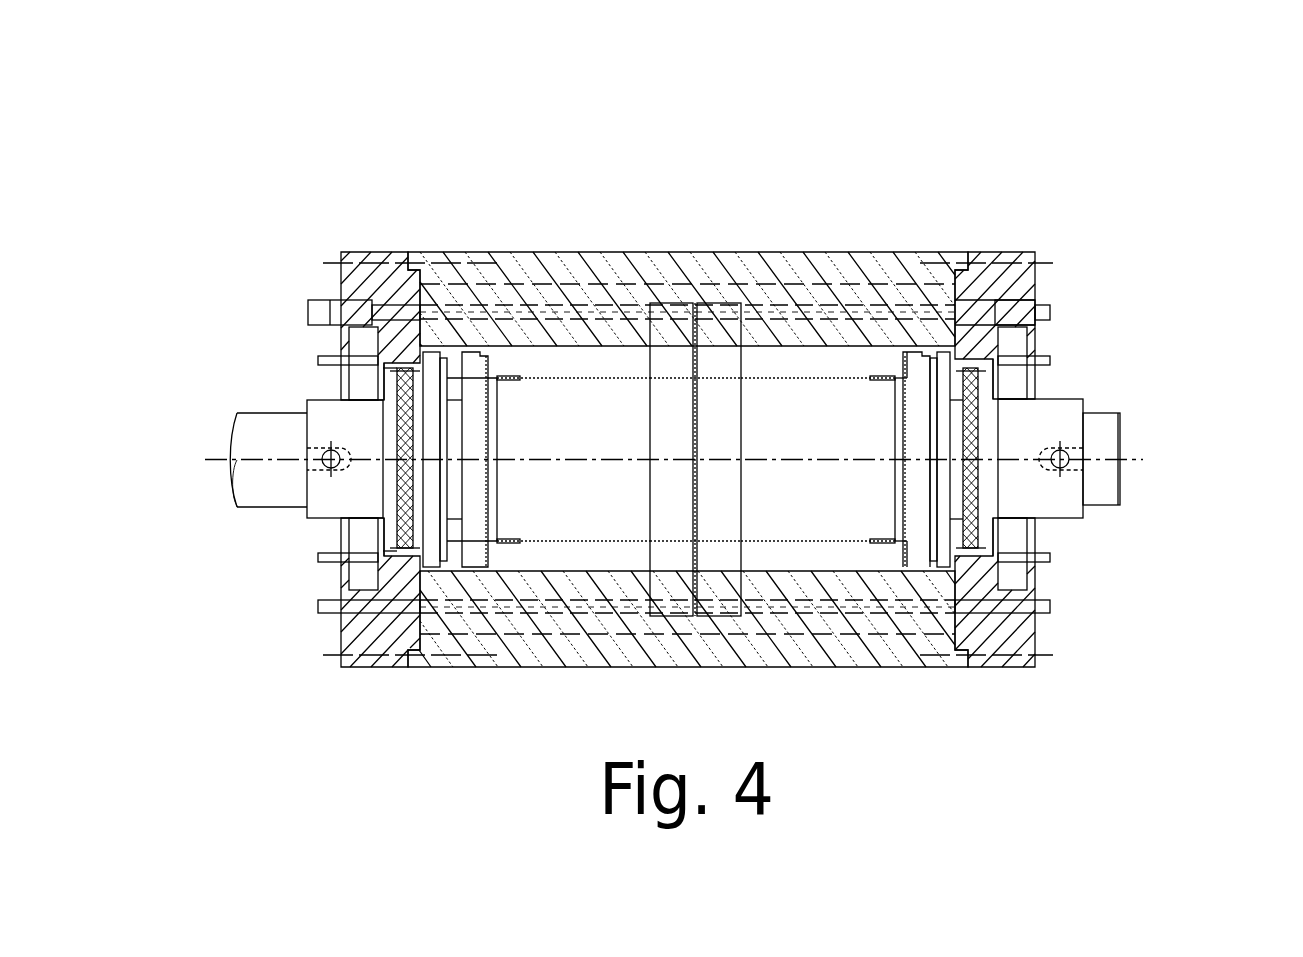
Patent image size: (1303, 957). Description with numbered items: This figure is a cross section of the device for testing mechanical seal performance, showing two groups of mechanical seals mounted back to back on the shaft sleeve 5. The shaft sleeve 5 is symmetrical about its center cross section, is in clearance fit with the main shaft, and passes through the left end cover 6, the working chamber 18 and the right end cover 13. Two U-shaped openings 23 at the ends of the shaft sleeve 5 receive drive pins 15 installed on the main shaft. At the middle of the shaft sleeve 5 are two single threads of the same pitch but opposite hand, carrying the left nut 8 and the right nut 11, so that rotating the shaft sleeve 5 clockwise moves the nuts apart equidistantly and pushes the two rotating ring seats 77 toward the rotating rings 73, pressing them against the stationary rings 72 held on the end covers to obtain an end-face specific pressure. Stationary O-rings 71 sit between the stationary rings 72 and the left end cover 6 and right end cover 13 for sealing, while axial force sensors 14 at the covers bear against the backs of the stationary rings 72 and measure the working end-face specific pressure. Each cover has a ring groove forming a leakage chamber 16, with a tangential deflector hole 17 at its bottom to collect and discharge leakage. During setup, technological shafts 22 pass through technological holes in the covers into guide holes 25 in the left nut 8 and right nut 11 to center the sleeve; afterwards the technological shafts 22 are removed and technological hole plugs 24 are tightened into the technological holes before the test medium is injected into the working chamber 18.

The shaft sleeve 5 is at (335, 417).
The left end cover 6 is at (352, 345).
The left nut 8 is at (663, 300).
The right nut 11 is at (722, 310).
The right end cover 13 is at (990, 280).
The axial force sensor 14 is at (342, 550).
The drive pin 15 is at (317, 450).
The leakage chamber 16 is at (1020, 580).
The deflector hole 17 is at (528, 268).
The working chamber 18 is at (762, 290).
The technological shaft 22 is at (575, 292).
The U-shaped opening 23 is at (300, 463).
The technological hole plug 24 is at (327, 305).
The guide hole 25 is at (665, 617).
The stationary O-ring 71 is at (405, 375).
The stationary ring 72 is at (436, 365).
The rotating ring 73 is at (478, 372).
The rotating ring seat 77 is at (630, 387).